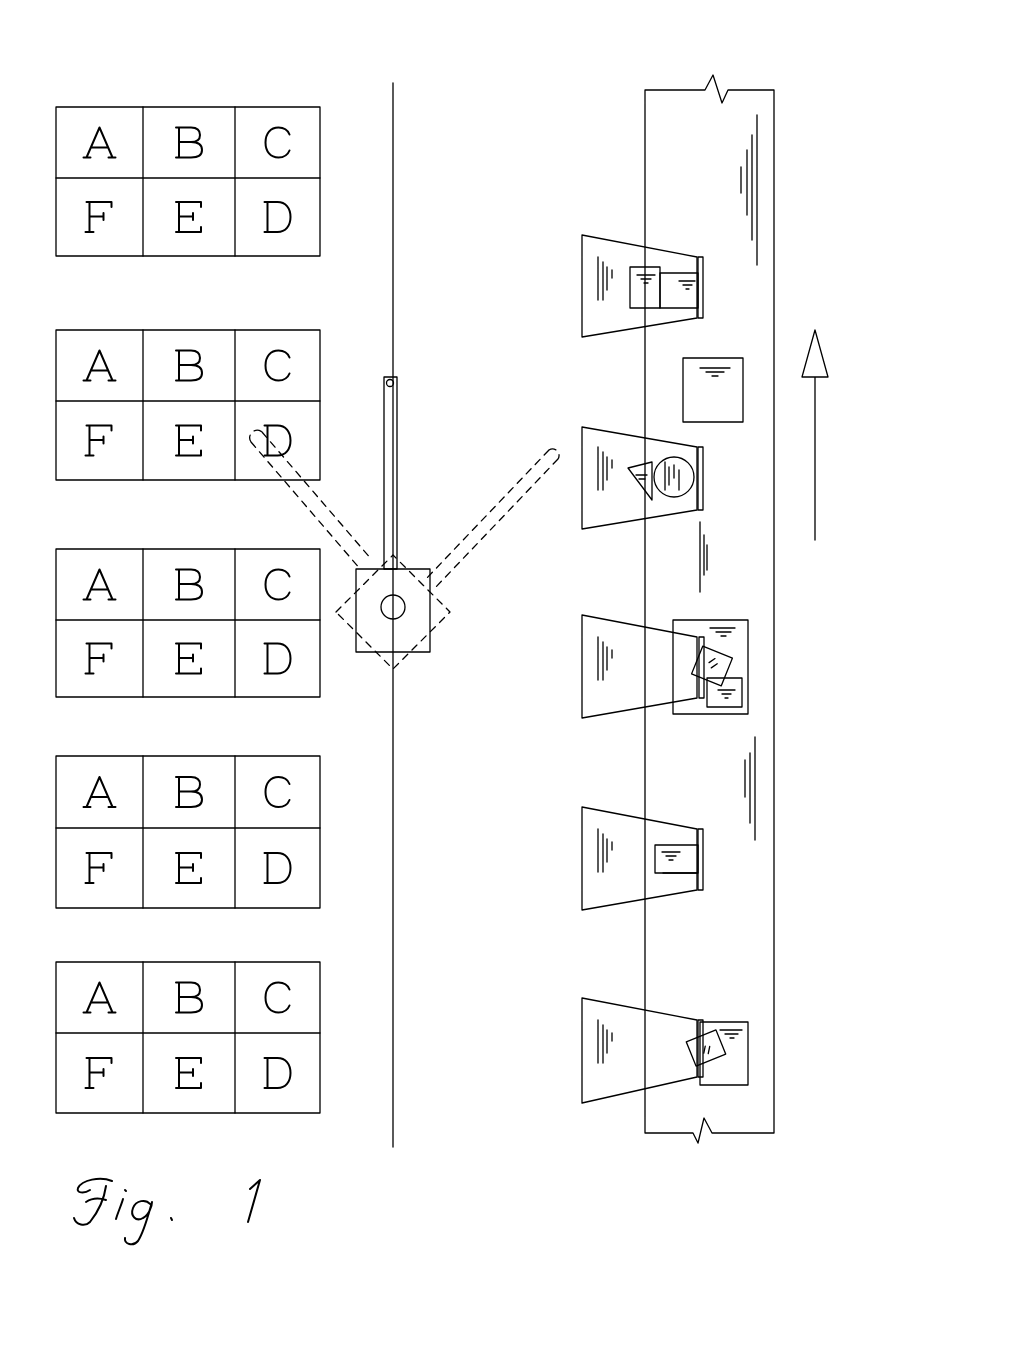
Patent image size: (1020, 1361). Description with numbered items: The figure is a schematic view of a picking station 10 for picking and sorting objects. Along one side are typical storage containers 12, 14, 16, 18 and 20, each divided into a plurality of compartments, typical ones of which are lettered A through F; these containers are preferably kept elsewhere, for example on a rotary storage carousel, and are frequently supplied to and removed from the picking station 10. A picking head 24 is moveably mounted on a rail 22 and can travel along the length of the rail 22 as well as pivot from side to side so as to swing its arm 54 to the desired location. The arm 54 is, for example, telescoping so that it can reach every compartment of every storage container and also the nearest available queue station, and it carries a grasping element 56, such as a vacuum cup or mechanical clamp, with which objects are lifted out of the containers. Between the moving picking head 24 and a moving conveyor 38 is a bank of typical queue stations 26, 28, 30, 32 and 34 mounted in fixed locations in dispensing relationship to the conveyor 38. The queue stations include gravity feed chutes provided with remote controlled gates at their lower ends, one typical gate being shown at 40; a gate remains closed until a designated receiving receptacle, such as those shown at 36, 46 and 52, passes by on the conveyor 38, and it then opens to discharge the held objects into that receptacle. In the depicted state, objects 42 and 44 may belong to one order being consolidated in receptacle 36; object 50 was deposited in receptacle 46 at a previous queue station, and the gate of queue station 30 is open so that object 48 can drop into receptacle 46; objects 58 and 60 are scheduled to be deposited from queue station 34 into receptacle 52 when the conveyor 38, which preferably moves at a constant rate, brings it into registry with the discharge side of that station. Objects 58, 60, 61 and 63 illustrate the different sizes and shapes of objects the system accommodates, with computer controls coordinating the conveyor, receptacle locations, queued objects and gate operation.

The picking station 10 is at (498, 55).
The storage container 12 is at (185, 107).
The storage container 14 is at (185, 330).
The storage container 16 is at (187, 549).
The storage container 18 is at (177, 756).
The storage container 20 is at (175, 962).
The rail 22 is at (395, 1008).
The picking head 24 is at (430, 643).
The queue station 26 is at (582, 1045).
The queue station 28 is at (582, 883).
The queue station 30 is at (582, 666).
The queue station 32 is at (582, 527).
The queue station 34 is at (578, 325).
The receiving receptacle 36 is at (740, 1085).
The conveyor 38 is at (712, 985).
The gate 40 is at (700, 850).
The object 42 is at (748, 1050).
The object 44 is at (663, 877).
The receiving receptacle 46 is at (713, 620).
The object 48 is at (735, 660).
The object 50 is at (742, 695).
The receiving receptacle 52 is at (708, 357).
The arm 54 is at (392, 513).
The grasping element 56 is at (384, 380).
The object 58 is at (683, 272).
The object 60 is at (642, 268).
The object 61 is at (704, 470).
The object 63 is at (632, 462).